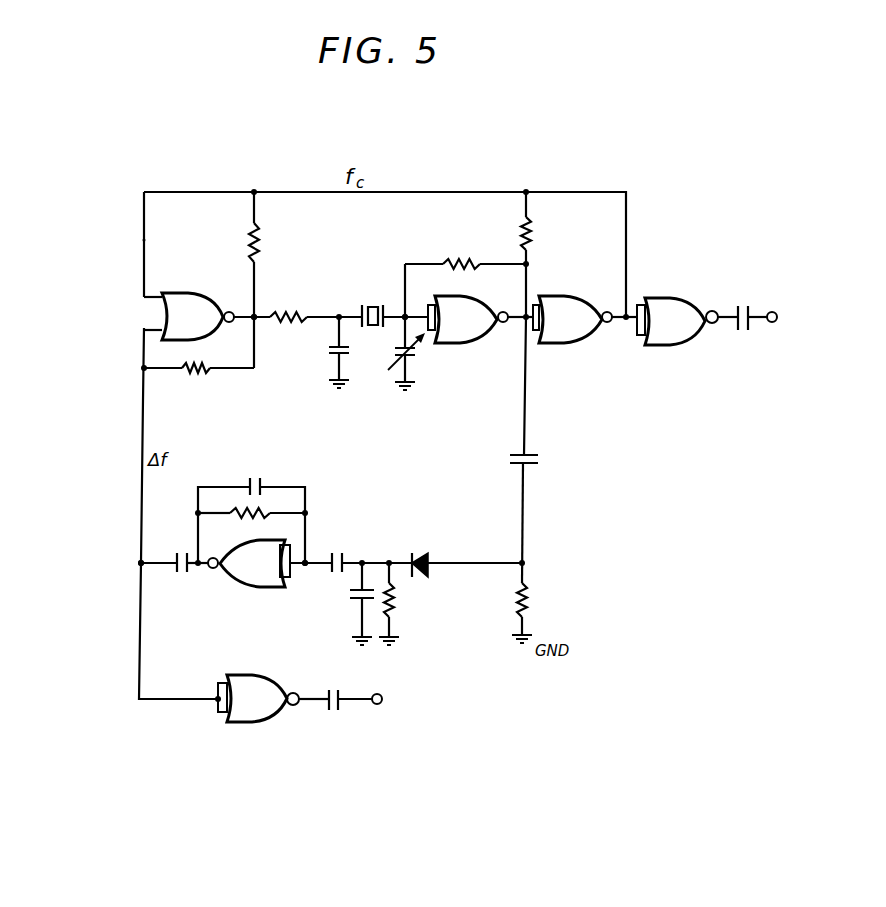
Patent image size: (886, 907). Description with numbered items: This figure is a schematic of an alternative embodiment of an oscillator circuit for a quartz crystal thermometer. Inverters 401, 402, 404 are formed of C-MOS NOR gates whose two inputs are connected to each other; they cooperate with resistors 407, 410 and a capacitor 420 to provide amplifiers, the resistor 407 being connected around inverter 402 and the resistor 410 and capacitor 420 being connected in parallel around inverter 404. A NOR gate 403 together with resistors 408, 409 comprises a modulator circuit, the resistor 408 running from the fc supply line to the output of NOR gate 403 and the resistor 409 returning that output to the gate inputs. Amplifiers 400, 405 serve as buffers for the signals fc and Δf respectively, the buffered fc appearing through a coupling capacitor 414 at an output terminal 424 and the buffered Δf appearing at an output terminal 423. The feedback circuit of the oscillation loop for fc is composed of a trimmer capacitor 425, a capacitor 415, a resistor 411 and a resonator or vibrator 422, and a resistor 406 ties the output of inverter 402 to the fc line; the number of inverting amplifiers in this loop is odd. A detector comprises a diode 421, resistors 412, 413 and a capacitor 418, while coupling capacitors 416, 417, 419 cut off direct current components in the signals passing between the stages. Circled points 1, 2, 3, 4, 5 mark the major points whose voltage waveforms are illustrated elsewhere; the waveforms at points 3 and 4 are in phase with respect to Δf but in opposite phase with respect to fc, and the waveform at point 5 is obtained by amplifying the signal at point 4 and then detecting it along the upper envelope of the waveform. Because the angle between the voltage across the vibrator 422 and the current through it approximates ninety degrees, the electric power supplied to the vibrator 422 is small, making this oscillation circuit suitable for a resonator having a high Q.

The signal point 1 is at (144, 240).
The signal point 2 is at (141, 563).
The waveform ③ point 3 is at (254, 320).
The waveform ④ point 4 is at (405, 319).
The waveform ⑤ point 5 is at (305, 561).
The amplifier 400 is at (668, 298).
The inverter 401 is at (583, 296).
The inverter 402 is at (470, 344).
The NOR gate 403 is at (163, 314).
The inverter 404 is at (270, 588).
The amplifier 405 is at (240, 723).
The resistor 406 is at (529, 236).
The resistor 407 is at (470, 260).
The resistor 408 is at (258, 241).
The resistor 409 is at (196, 372).
The resistor 410 is at (248, 521).
The resistor 411 is at (289, 306).
The resistor 412 is at (529, 602).
The resistor 413 is at (396, 600).
The coupling capacitor 414 is at (741, 334).
The capacitor 415 is at (330, 350).
The coupling capacitor 416 is at (541, 459).
The coupling capacitor 417 is at (338, 553).
The capacitor 418 is at (350, 594).
The coupling capacitor 419 is at (181, 576).
The capacitor 420 is at (256, 481).
The diode 421 is at (424, 542).
The resonator or vibrator 422 is at (373, 305).
The Δf output terminal 423 is at (377, 694).
The fc output terminal 424 is at (770, 312).
The trimmer capacitor 425 is at (418, 358).